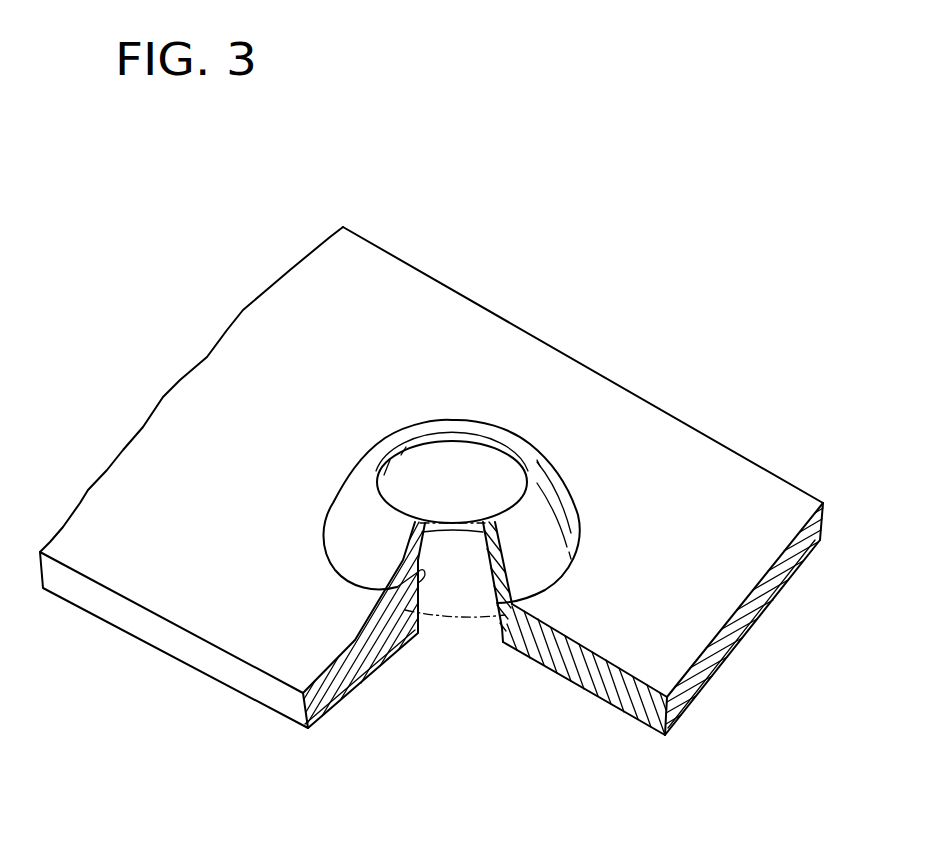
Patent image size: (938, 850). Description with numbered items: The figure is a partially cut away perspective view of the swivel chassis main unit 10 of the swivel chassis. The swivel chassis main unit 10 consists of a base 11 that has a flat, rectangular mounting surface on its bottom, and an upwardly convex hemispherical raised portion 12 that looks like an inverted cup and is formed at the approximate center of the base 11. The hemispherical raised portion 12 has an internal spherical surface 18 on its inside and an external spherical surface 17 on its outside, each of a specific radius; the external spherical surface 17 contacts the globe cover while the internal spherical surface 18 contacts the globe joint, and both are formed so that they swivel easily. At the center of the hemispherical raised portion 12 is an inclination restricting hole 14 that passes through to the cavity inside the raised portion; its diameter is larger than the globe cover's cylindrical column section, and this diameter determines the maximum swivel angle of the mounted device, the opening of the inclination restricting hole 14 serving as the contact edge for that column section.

The swivel chassis main unit 10 is at (563, 329).
The base 11 is at (227, 623).
The hemispherical raised portion 12 is at (355, 518).
The inclination restricting hole 14 is at (415, 443).
The external spherical surface 17 is at (542, 528).
The internal spherical surface 18 is at (397, 587).